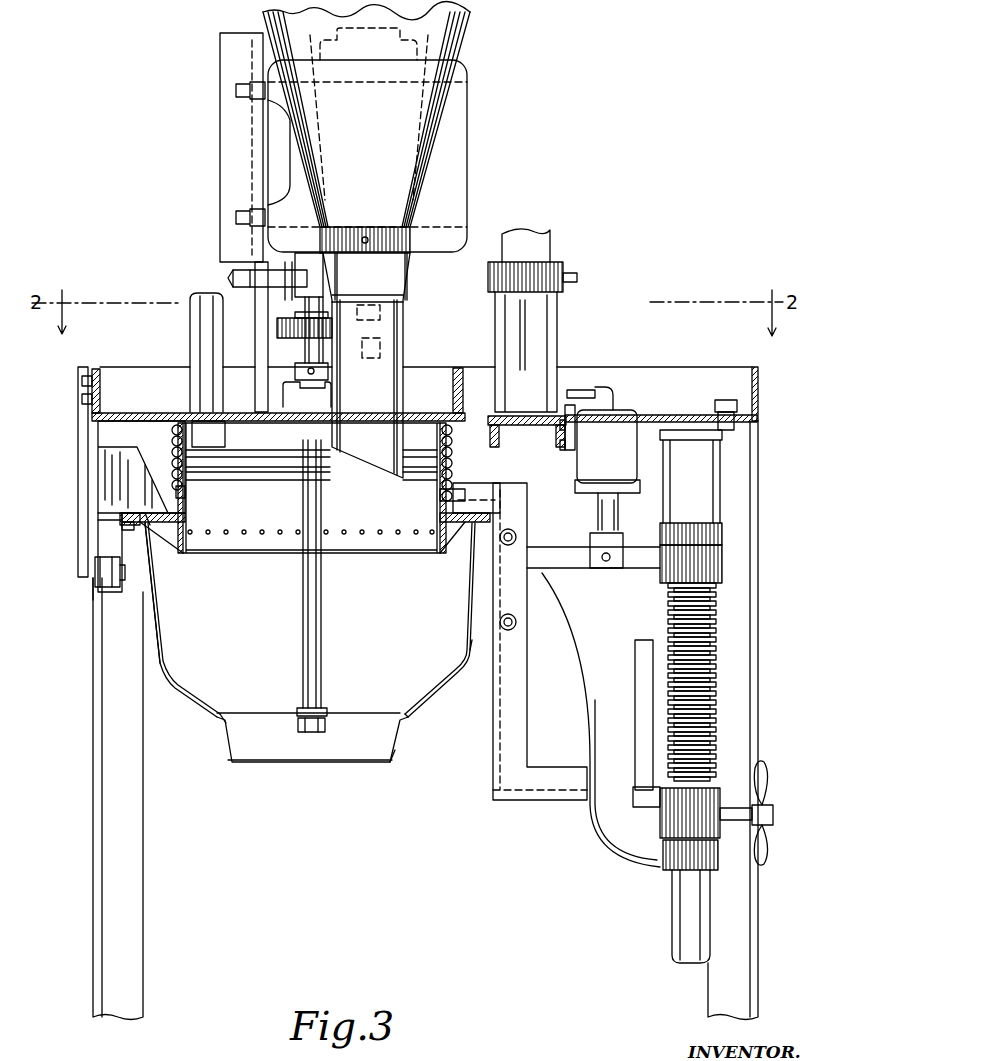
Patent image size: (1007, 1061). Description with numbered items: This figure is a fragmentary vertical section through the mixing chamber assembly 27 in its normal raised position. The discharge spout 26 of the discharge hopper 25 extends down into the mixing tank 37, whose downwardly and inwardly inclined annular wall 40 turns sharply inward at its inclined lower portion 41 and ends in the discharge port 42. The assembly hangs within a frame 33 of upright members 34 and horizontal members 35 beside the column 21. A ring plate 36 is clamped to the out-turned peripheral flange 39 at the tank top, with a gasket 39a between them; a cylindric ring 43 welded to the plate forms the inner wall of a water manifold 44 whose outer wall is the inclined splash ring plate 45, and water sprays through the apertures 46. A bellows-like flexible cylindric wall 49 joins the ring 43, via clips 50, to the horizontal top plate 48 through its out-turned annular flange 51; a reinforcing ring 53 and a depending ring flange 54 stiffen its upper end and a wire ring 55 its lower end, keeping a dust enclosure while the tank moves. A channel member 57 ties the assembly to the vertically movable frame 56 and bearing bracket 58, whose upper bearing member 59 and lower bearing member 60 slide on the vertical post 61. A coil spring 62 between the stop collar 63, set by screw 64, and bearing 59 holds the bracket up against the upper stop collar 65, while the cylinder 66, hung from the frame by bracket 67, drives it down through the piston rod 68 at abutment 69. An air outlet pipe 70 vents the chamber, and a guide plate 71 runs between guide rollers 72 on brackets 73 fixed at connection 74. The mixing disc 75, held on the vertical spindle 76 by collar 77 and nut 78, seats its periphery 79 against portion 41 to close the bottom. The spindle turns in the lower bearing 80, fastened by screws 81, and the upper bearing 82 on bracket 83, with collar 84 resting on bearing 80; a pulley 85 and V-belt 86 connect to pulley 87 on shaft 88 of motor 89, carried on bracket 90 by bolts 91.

The column 21 is at (540, 246).
The discharge hopper 25 is at (420, 155).
The discharge spout 26 is at (400, 345).
The mixing chamber assembly 27 is at (155, 670).
The frame 33 is at (145, 928).
The upright members 34 is at (130, 848).
The horizontal members 35 is at (125, 412).
The ring plate 36 is at (115, 517).
The mixing tank 37 is at (458, 672).
The out-turned peripheral flange 39 is at (120, 535).
The gasket 39a is at (118, 530).
The annular wall 40 is at (160, 617).
The inclined lower portion 41 is at (423, 705).
The discharge port 42 is at (395, 755).
The cylindric ring 43 is at (226, 517).
The water manifold 44 is at (450, 545).
The inclined splash ring plate 45 is at (170, 545).
The apertures 46 is at (192, 533).
The horizontal top plate 48 is at (430, 420).
The flexible cylindric wall 49 is at (455, 455).
The clips 50 is at (176, 492).
The out-turned annular flange 51 is at (160, 428).
The reinforcing ring 53 is at (452, 425).
The depending ring flange 54 is at (445, 415).
The wire ring 55 is at (455, 470).
The vertically movable frame 56 is at (520, 683).
The channel member 57 is at (505, 497).
The bearing bracket 58 is at (605, 800).
The upper bearing member 59 is at (700, 570).
The lower bearing member 60 is at (712, 858).
The vertical post 61 is at (682, 945).
The coil spring 62 is at (720, 690).
The stop collar 63 is at (672, 825).
The screw 64 is at (740, 805).
The upper stop collar 65 is at (715, 530).
The cylinder 66 is at (620, 420).
The bracket 67 is at (570, 410).
The piston rod 68 is at (600, 515).
The abutment 69 is at (598, 560).
The air outlet pipe 70 is at (205, 302).
The guide plate 71 is at (100, 520).
The guide rollers 72 is at (100, 570).
The brackets 73 is at (82, 480).
The connection 74 is at (97, 370).
The mixing disc 75 is at (260, 713).
The vertical spindle 76 is at (318, 655).
The collar 77 is at (322, 710).
The nut 78 is at (325, 725).
The periphery 79 is at (215, 712).
The lower bearing 80 is at (300, 420).
The screws 81 is at (265, 395).
The upper bearing 82 is at (315, 278).
The bracket 83 is at (255, 300).
The collar 84 is at (305, 380).
The pulley 85 is at (300, 345).
The V-belt 86 is at (280, 330).
The pulley 87 is at (395, 320).
The shaft 88 is at (380, 355).
The motor 89 is at (452, 207).
The bracket 90 is at (262, 160).
The bolts 91 is at (258, 88).